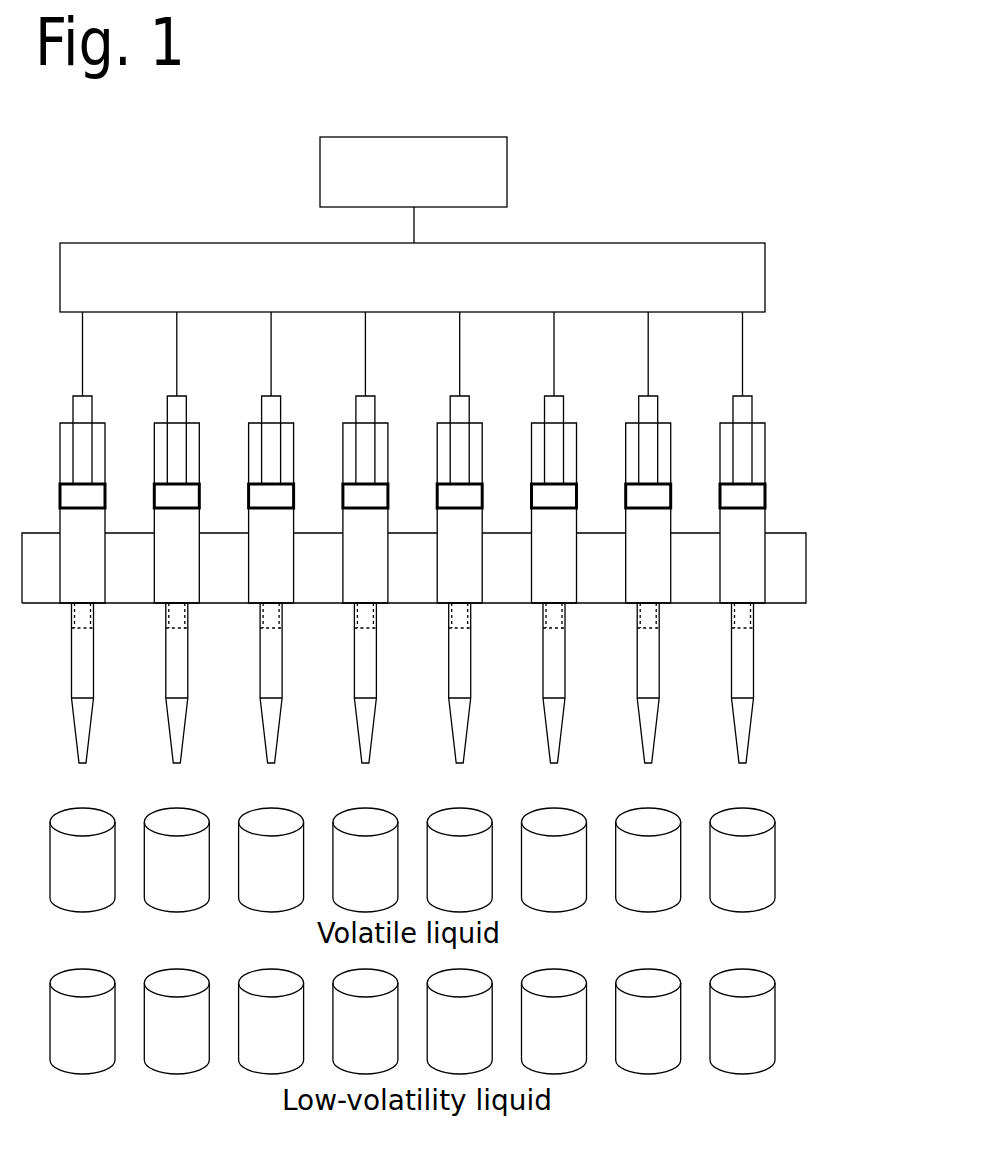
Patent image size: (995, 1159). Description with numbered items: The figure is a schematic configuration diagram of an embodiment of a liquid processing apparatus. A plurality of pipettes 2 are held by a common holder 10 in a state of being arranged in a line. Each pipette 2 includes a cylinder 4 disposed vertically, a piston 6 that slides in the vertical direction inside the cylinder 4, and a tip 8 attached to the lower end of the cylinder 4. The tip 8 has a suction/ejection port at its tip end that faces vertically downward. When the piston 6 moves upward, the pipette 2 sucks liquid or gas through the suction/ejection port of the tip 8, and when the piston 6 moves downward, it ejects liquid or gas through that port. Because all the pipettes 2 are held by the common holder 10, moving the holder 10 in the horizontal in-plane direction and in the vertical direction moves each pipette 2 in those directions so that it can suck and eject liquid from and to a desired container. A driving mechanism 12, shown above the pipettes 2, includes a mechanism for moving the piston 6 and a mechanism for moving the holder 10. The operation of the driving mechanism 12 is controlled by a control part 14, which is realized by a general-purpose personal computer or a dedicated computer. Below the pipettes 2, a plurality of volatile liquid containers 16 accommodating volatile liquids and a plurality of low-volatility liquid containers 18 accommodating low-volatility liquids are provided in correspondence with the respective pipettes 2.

The pipette 2 is at (773, 402).
The cylinder 4 is at (765, 453).
The piston 6 is at (750, 495).
The tip 8 is at (754, 672).
The holder 10 is at (790, 567).
The driving mechanism 12 is at (765, 243).
The control part 14 is at (507, 137).
The volatile liquid container 16 is at (763, 866).
The low-volatility liquid container 18 is at (763, 1031).